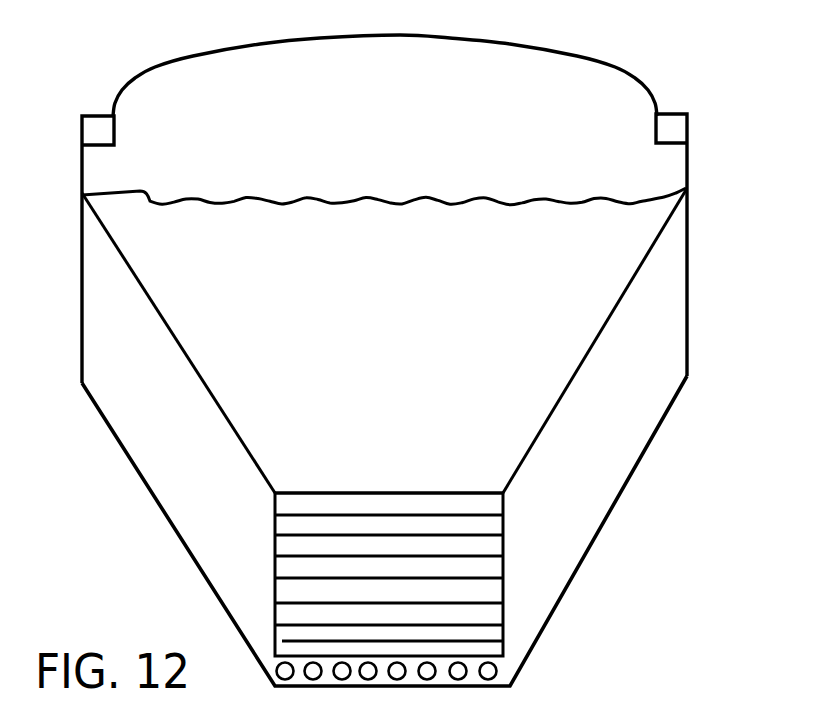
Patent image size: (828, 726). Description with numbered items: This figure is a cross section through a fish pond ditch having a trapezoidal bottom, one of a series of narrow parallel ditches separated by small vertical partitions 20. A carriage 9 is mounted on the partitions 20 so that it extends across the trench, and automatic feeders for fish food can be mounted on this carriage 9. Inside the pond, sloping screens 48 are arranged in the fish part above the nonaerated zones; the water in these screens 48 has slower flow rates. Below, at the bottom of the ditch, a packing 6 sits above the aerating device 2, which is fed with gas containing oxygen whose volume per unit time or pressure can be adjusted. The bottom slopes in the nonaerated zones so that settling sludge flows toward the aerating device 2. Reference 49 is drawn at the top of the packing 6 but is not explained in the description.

The carriage 9 is at (401, 38).
The vertical partition 20 is at (688, 277).
The sloping screen 48 is at (580, 365).
The top plate of filter stack 49 is at (350, 495).
The packing 6 is at (447, 508).
The aerating device 2 is at (488, 673).